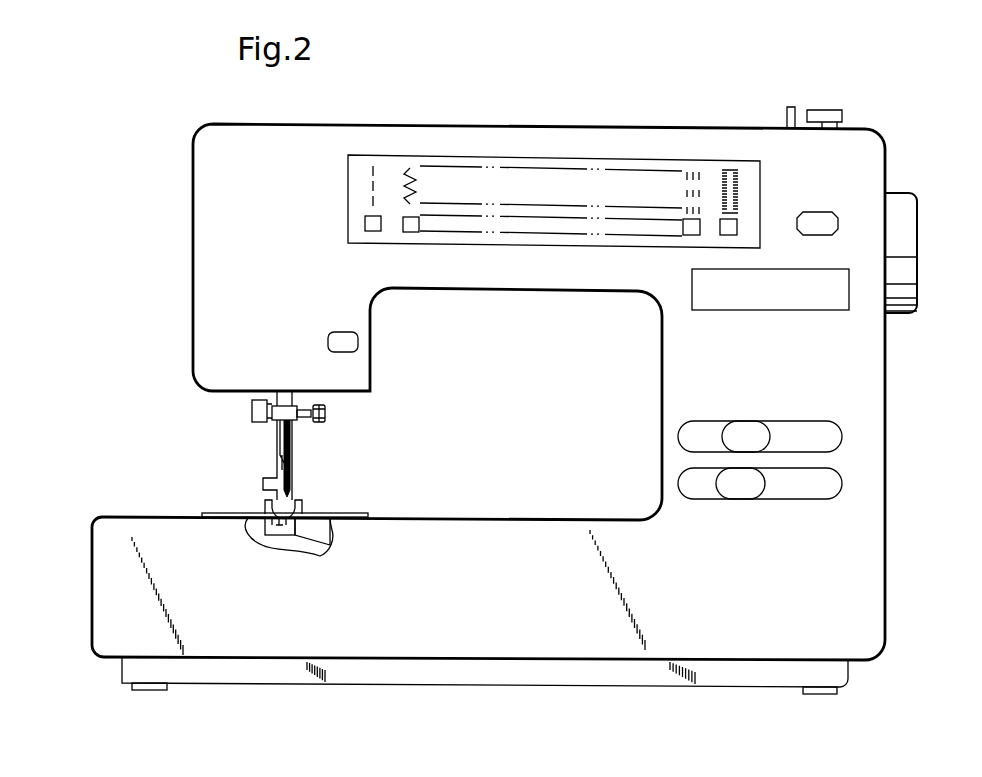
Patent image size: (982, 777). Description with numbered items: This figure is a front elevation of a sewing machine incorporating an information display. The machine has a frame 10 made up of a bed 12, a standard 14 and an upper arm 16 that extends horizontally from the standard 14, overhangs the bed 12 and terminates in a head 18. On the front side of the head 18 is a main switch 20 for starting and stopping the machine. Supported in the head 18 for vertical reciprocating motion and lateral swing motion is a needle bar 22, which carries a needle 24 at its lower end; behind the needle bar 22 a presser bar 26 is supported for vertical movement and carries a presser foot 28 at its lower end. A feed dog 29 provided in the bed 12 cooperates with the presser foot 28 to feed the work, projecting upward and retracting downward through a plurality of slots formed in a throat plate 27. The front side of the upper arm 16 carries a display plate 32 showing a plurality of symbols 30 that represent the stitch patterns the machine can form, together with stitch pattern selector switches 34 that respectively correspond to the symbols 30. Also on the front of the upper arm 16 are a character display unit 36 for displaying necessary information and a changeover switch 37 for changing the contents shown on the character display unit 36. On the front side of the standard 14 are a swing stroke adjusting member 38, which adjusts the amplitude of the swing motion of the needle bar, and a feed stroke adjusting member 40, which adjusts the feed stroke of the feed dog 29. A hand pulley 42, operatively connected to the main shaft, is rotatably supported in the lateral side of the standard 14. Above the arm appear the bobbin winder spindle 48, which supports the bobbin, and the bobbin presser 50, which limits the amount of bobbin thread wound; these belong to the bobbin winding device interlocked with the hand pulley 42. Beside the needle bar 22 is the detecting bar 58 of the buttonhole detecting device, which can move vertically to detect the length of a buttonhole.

The frame 10 is at (676, 125).
The bed 12 is at (478, 542).
The standard 14 is at (868, 402).
The upper arm 16 is at (460, 133).
The head 18 is at (205, 357).
The main switch 20 is at (347, 340).
The needle bar 22 is at (288, 395).
The needle 24 is at (297, 433).
The presser bar 26 is at (297, 452).
The throat plate 27 is at (228, 514).
The presser foot 28 is at (303, 512).
The feed dog 29 is at (262, 527).
The symbols 30 is at (410, 167).
The display plate 32 is at (348, 187).
The stitch pattern selector switches 34 is at (410, 233).
The character display unit 36 is at (775, 310).
The changeover switch 37 is at (817, 221).
The swing stroke adjusting member 38 is at (743, 435).
The feed stroke adjusting member 40 is at (743, 492).
The hand pulley 42 is at (905, 273).
The bobbin winder spindle 48 is at (787, 118).
The bobbin presser 50 is at (822, 112).
The detecting bar 58 is at (250, 412).